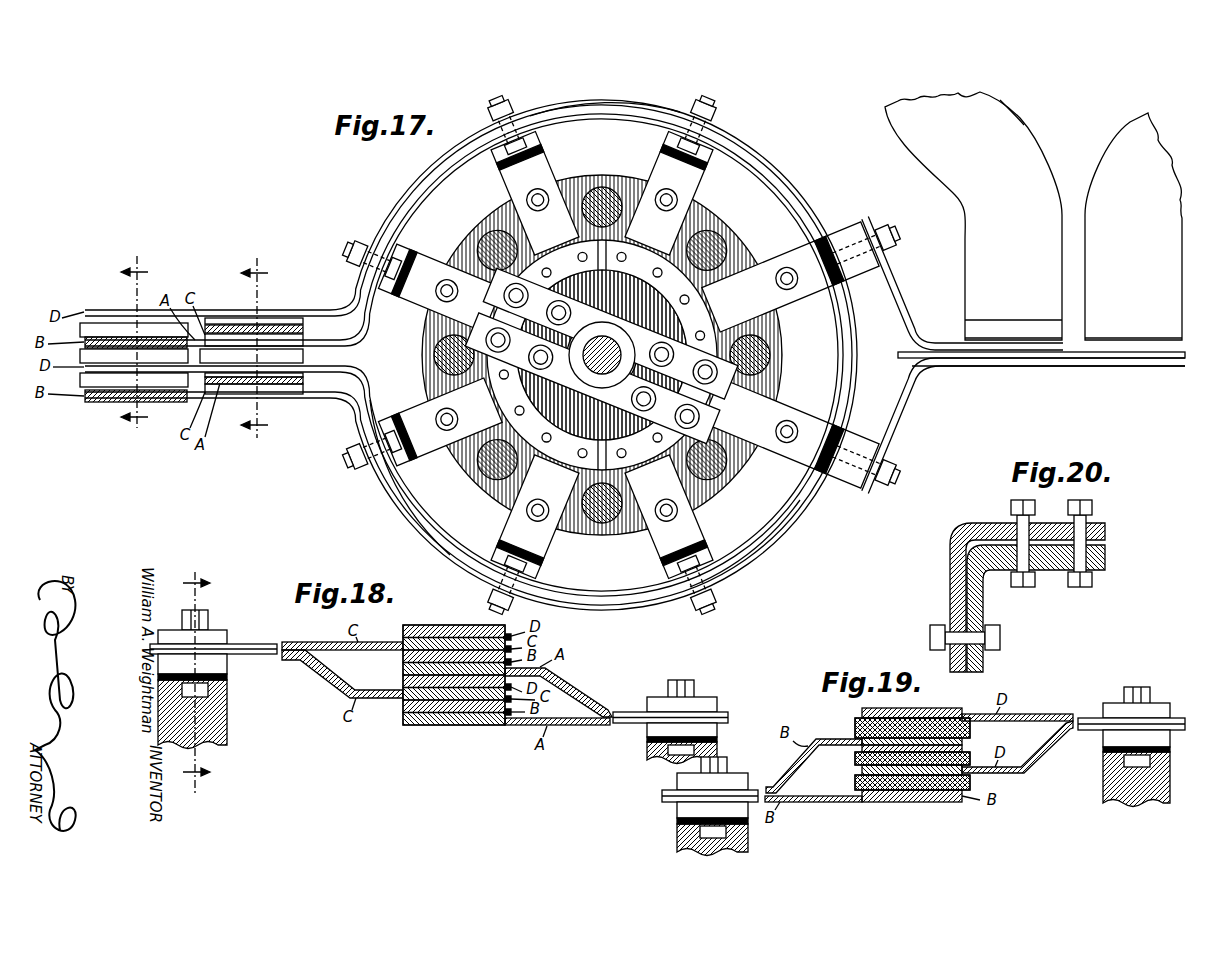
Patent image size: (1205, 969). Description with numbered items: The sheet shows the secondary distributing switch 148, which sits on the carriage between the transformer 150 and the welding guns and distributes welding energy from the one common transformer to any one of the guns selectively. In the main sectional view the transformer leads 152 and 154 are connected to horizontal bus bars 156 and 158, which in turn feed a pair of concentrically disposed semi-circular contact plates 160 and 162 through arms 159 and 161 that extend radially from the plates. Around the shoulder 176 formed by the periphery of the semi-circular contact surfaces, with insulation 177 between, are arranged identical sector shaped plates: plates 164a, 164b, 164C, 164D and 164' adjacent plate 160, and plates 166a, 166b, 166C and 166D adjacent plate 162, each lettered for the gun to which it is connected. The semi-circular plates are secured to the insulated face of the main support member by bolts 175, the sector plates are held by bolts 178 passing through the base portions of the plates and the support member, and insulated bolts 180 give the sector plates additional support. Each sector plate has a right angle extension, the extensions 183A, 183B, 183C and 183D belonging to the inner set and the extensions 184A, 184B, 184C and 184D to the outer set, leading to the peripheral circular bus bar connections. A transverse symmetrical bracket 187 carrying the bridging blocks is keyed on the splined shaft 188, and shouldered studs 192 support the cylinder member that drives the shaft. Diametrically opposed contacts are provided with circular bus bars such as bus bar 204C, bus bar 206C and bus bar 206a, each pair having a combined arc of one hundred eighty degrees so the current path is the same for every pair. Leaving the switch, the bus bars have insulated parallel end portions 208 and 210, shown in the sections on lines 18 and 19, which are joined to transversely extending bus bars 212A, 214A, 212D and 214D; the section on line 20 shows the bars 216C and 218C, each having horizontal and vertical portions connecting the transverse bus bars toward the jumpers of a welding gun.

In FIG. 17, the secondary distributing switch 148 is at (395, 206).
In FIG. 17, the transformer 150 is at (1022, 121).
In FIG. 17, the transformer lead 152 is at (1125, 305).
In FIG. 17, the transformer lead 154 is at (964, 262).
In FIG. 17, the horizontal bus bar 156 is at (995, 368).
In FIG. 17, the horizontal bus bar 158 is at (899, 316).
In FIG. 17, the arm 159 is at (852, 232).
In FIG. 17, the semi-circular contact plate 160 is at (724, 240).
In FIG. 17, the arm 161 is at (870, 478).
In FIG. 17, the semi-circular contact plate 162 is at (552, 468).
In FIG. 17, the sector shaped plate 164a is at (430, 262).
In FIG. 17, the sector shaped plate 164b is at (578, 188).
In FIG. 17, the sector shaped plate 164C is at (703, 196).
In FIG. 17, the sector shaped plate 164D is at (800, 300).
In FIG. 17, the sector shaped plate 164' is at (790, 430).
In FIG. 17, the sector shaped plate 166a is at (800, 418).
In FIG. 17, the sector shaped plate 166b is at (700, 510).
In FIG. 17, the sector shaped plate 166C is at (555, 540).
In FIG. 17, the sector shaped plate 166D is at (425, 458).
In FIG. 17, the bolts 175 is at (648, 292).
In FIG. 17, the shoulder 176 is at (612, 190).
In FIG. 17, the insulation 177 is at (700, 233).
In FIG. 17, the bolts 178 is at (708, 292).
In FIG. 17, the insulated bolts 180 is at (542, 194).
In FIG. 17, the right angle extension portion 183A is at (412, 242).
In FIG. 17, the right angle extension portion 183B is at (530, 152).
In FIG. 17, the right angle extension portion 183C is at (702, 150).
In FIG. 17, the right angle extension portion 183D is at (848, 278).
In FIG. 17, the right angle extension portion 184A is at (835, 438).
In FIG. 17, the right angle extension portion 184B is at (675, 560).
In FIG. 17, the right angle extension portion 184C is at (540, 572).
In FIG. 17, the right angle extension portion 184D is at (420, 488).
In FIG. 17, the transverse symmetrical bracket 187 is at (452, 412).
In FIG. 17, the splined shaft 188 is at (600, 390).
In FIG. 17, the shouldered studs 192 is at (472, 345).
In FIG. 17, the circular connecting bus bar 204C is at (645, 106).
In FIG. 17, the circular connecting bus bar 206C is at (400, 488).
In FIG. 17, the circular connecting bus bar 206a is at (762, 557).
In FIG. 17, the parallel end portion 208 is at (233, 318).
In FIG. 17, the parallel end portion 210 is at (240, 396).
In FIG. 18, the transversely extending bus bar 212A is at (580, 690).
In FIG. 18, the transversely extending bus bar 214A is at (566, 727).
In FIG. 19, the transversely extending bus bar 212D is at (1040, 713).
In FIG. 19, the transversely extending bus bar 214D is at (1030, 775).
In FIG. 20, the bar 216C is at (976, 524).
In FIG. 20, the bar 218C is at (984, 598).
In FIG. 17, the section line 18- 18 is at (254, 350).
In FIG. 17, the section line 19- 19 is at (134, 342).
In FIG. 18, the section line 20- 20 is at (196, 681).